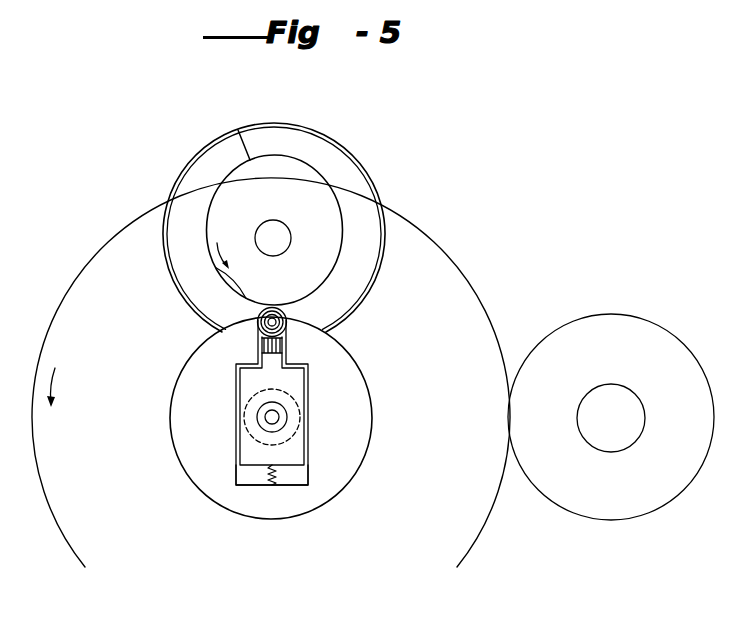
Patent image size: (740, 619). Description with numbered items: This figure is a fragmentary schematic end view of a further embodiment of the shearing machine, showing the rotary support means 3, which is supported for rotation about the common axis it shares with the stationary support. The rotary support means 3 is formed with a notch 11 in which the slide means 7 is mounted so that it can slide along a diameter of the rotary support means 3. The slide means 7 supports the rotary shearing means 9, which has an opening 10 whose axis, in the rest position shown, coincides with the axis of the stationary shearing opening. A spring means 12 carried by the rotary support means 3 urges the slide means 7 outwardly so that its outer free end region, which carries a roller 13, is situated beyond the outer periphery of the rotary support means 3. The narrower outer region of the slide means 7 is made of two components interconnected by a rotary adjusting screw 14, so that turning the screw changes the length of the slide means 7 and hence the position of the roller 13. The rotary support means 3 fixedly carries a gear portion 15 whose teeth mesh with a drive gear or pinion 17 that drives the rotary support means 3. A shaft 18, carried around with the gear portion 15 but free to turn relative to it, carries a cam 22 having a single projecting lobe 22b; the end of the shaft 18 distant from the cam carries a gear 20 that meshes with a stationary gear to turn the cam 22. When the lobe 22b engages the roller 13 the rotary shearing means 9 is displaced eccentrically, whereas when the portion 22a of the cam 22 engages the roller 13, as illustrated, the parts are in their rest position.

The rotary support means 3 is at (182, 465).
The slide means 7 is at (298, 452).
The rotary shearing means 9 is at (284, 410).
The opening 10 is at (279, 417).
The notch 11 is at (302, 476).
The spring means 12 is at (268, 483).
The roller 13 is at (283, 309).
The rotary adjusting screw 14 is at (278, 347).
The gear portion 15 is at (491, 508).
The drive gear or pinion 17 is at (667, 496).
The shaft 18 is at (291, 237).
The gear 20 is at (357, 160).
The cam 22 is at (320, 257).
The portion of the cam 22a is at (233, 287).
The lobe 22b is at (238, 130).